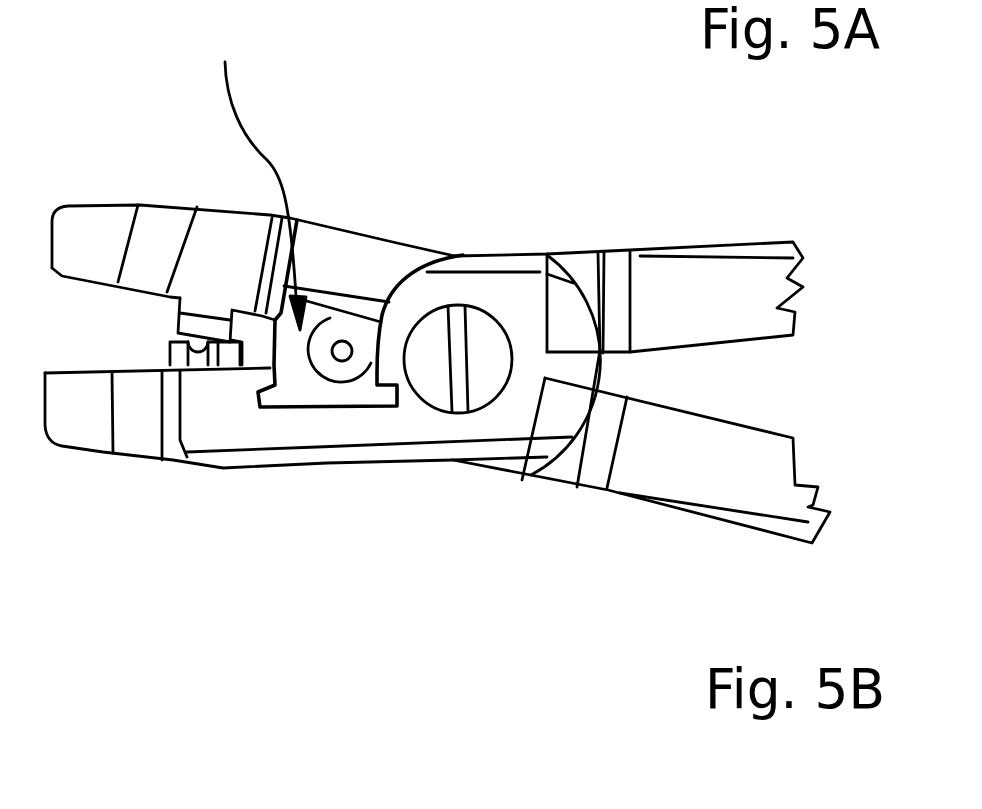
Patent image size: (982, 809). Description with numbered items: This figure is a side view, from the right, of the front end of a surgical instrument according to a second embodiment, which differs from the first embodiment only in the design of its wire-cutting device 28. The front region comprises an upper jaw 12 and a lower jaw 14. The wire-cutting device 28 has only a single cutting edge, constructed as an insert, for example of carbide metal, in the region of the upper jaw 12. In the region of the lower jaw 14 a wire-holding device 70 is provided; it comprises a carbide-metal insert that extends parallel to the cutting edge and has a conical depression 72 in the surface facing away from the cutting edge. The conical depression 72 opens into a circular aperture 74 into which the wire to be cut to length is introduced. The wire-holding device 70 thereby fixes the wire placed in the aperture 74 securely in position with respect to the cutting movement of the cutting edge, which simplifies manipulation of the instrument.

The upper jaw 12 is at (207, 268).
The lower jaw 14 is at (85, 442).
The wire-cutting device 28 is at (241, 165).
The wire-holding device 70 is at (297, 392).
The conical depression 72 is at (323, 327).
The circular aperture 74 is at (342, 352).